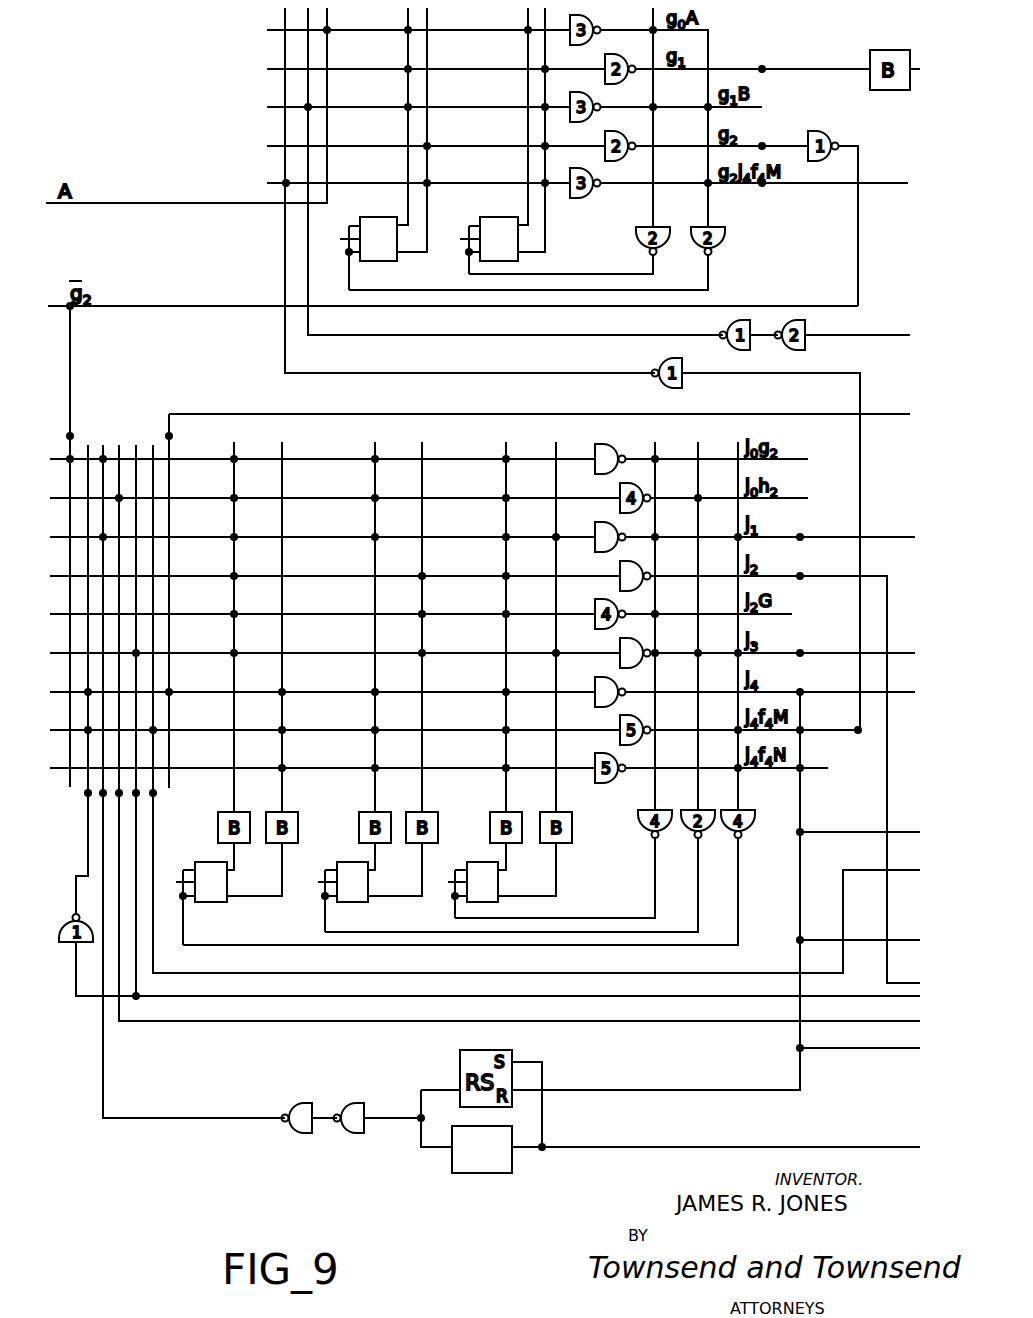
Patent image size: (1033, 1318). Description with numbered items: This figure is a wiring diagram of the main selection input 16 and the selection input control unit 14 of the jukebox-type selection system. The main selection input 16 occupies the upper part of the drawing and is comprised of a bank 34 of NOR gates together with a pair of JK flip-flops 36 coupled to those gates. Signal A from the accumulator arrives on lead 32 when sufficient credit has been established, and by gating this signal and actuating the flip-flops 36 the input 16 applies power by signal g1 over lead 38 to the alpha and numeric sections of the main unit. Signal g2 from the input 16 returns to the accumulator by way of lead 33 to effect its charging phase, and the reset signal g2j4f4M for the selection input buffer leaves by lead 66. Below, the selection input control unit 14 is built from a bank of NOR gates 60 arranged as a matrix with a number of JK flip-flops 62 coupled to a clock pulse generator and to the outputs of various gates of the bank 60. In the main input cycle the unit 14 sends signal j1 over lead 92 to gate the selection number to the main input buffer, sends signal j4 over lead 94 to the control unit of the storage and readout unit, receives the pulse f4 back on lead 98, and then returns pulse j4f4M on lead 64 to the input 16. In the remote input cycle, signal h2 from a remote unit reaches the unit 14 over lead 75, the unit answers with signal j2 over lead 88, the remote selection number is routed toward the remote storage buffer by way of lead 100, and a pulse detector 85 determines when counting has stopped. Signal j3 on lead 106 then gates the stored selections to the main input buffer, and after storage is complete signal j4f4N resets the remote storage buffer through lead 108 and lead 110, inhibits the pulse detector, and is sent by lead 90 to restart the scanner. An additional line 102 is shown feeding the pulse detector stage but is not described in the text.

The selection input control unit 14 is at (196, 410).
The main selection input 16 is at (434, 86).
The lead 32 is at (166, 203).
The lead 33 is at (791, 306).
The bank of NOR gates 34 is at (570, 58).
The JK flip-flops 36 is at (477, 274).
The lead 38 is at (803, 69).
The bank of NOR gates 60 is at (604, 440).
The JK flip-flops 62 is at (228, 904).
The lead 64 is at (860, 518).
The lead 66 is at (790, 186).
The lead 75 is at (698, 1022).
The pulse detector 85 is at (478, 1173).
The lead 88 is at (888, 983).
The lead 90 is at (870, 1048).
The lead 92 is at (833, 537).
The lead 94 is at (840, 694).
The lead 98 is at (379, 996).
The lead 100 is at (696, 1147).
The line 102 is at (202, 1118).
The lead 106 is at (846, 653).
The lead 108 is at (800, 895).
The lead 110 is at (880, 940).